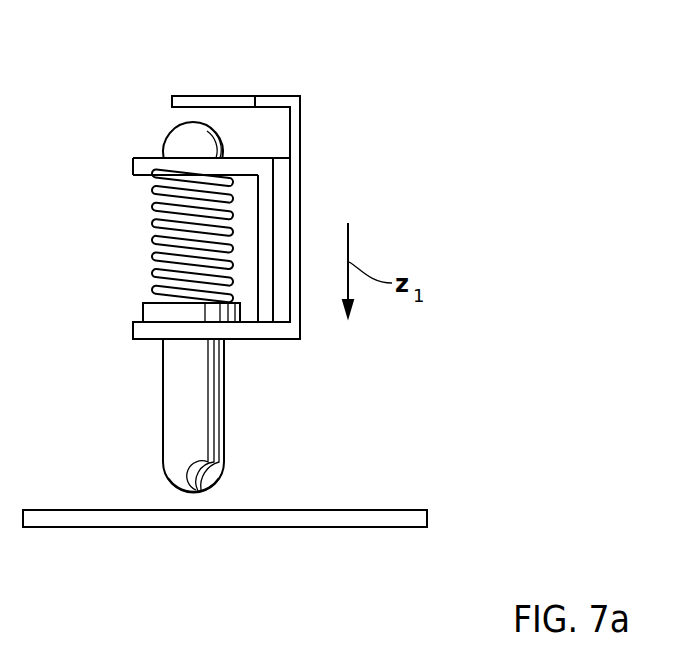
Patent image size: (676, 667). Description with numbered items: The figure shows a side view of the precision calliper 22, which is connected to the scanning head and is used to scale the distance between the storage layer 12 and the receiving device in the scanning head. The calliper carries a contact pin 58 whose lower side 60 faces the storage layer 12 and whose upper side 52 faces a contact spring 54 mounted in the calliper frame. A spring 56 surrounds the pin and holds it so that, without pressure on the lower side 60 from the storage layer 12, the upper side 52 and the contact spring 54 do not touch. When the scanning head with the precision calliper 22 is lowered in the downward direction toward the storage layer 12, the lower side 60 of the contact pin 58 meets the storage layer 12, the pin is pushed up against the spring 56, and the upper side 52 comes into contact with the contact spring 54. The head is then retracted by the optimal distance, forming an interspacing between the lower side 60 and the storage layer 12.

The storage layer 12 is at (378, 516).
The precision calliper 22 is at (413, 133).
The upper side of the contact pin 52 is at (172, 140).
The contact spring 54 is at (238, 107).
The spring 56 is at (152, 262).
The contact pin 58 is at (165, 400).
The lower side of the contact pin 60 is at (200, 493).